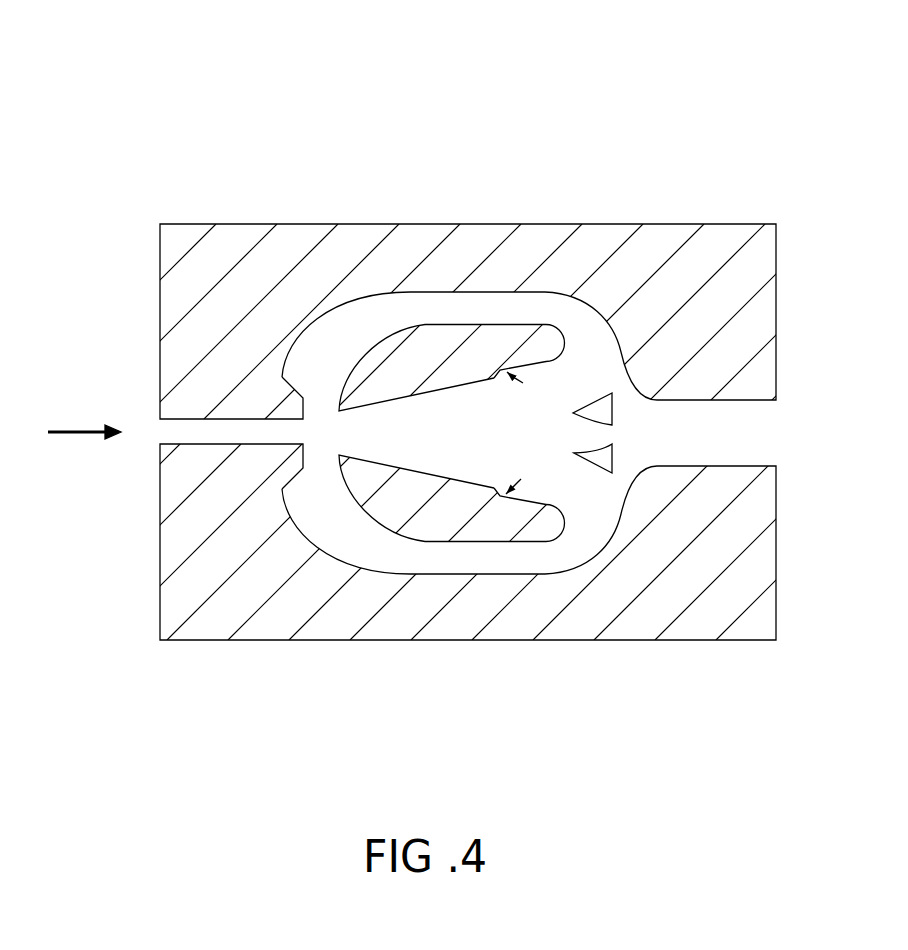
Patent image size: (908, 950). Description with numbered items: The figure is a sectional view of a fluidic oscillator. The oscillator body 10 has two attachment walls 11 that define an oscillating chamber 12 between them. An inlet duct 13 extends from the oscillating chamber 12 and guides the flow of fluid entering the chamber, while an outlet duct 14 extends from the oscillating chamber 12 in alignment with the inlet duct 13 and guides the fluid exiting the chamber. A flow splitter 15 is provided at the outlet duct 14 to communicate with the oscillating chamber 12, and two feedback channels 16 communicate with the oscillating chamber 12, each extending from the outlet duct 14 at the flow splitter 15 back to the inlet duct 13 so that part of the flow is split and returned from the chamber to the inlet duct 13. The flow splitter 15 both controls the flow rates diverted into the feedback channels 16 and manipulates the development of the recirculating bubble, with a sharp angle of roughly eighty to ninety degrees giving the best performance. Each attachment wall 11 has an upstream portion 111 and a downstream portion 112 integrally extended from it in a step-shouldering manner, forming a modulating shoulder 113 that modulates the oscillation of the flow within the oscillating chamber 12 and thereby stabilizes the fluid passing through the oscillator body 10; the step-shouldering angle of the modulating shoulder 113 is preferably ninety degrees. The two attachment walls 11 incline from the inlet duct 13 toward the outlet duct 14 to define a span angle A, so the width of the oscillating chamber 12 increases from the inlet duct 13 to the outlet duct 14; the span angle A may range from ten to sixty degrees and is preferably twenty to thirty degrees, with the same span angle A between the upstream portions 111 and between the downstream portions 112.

The oscillator body 10 is at (454, 399).
The attachment walls 11 is at (507, 66).
The oscillating chamber 12 is at (544, 412).
The inlet duct 13 is at (212, 434).
The outlet duct 14 is at (728, 443).
The flow splitter 15 is at (612, 393).
The feedback channels 16 is at (337, 329).
The upstream portion 111 is at (447, 386).
The downstream portion 112 is at (543, 353).
The modulating shoulder 113 is at (494, 366).
The span angle A is at (413, 399).